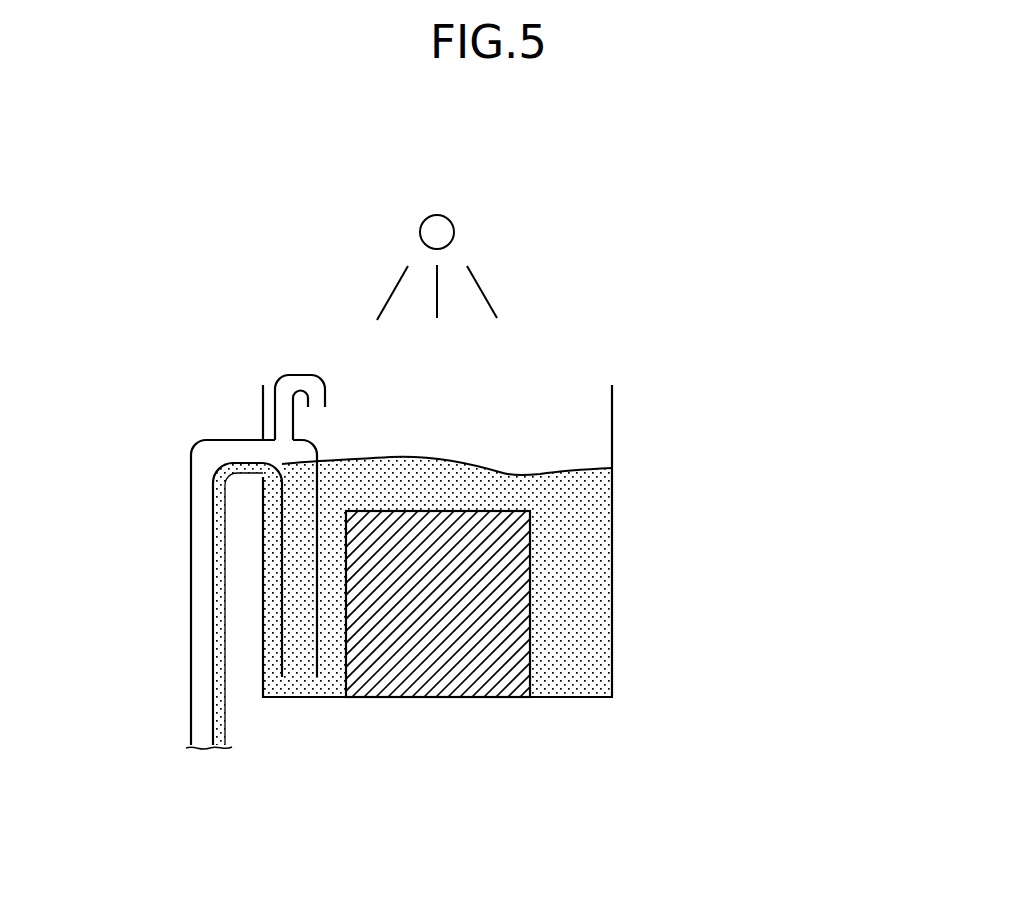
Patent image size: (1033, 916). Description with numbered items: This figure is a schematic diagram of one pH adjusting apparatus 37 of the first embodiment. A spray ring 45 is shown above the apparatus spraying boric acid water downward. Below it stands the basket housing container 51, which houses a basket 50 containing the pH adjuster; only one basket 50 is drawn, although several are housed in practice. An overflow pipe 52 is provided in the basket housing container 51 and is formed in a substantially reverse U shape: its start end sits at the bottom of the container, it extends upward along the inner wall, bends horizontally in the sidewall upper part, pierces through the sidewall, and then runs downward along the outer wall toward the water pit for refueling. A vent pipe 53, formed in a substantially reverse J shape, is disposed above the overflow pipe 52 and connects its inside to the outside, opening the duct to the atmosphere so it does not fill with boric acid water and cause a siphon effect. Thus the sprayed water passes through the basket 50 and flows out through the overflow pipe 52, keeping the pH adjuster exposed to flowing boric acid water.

The pH adjusting apparatus 37 is at (582, 351).
The spray ring 45 is at (448, 215).
The basket 50 is at (427, 683).
The basket housing container 51 is at (612, 623).
The overflow pipe 52 is at (207, 440).
The vent pipe 53 is at (297, 370).